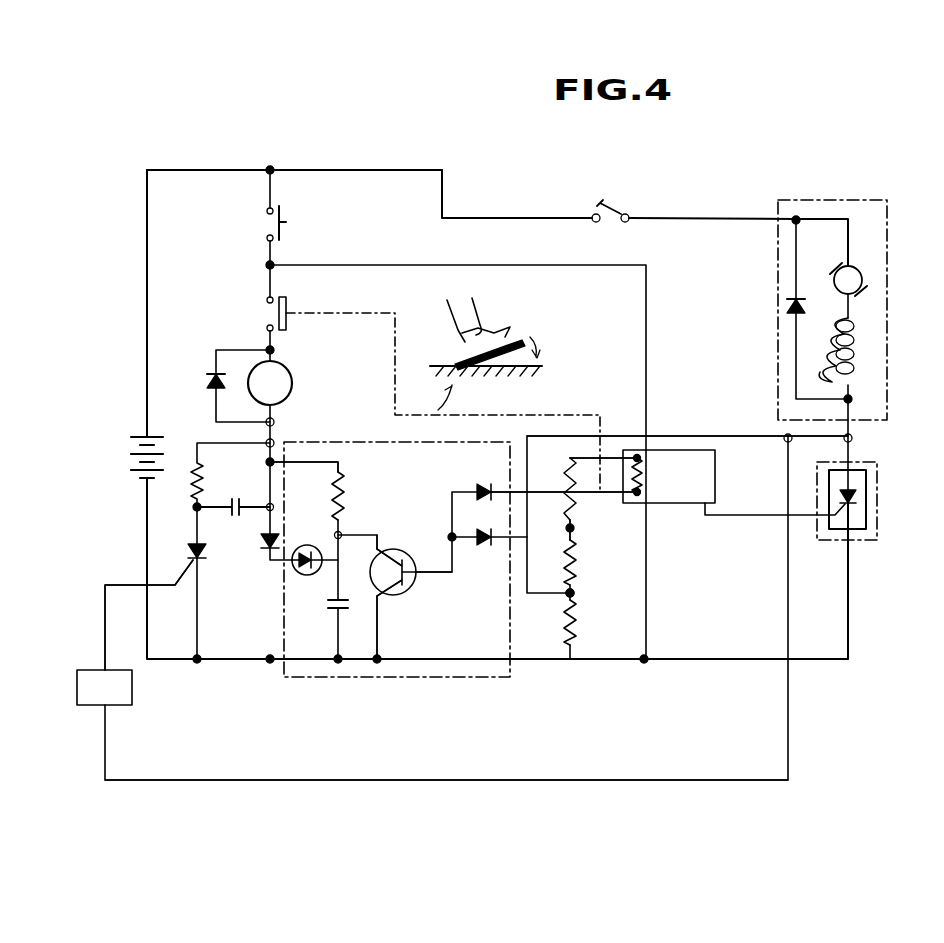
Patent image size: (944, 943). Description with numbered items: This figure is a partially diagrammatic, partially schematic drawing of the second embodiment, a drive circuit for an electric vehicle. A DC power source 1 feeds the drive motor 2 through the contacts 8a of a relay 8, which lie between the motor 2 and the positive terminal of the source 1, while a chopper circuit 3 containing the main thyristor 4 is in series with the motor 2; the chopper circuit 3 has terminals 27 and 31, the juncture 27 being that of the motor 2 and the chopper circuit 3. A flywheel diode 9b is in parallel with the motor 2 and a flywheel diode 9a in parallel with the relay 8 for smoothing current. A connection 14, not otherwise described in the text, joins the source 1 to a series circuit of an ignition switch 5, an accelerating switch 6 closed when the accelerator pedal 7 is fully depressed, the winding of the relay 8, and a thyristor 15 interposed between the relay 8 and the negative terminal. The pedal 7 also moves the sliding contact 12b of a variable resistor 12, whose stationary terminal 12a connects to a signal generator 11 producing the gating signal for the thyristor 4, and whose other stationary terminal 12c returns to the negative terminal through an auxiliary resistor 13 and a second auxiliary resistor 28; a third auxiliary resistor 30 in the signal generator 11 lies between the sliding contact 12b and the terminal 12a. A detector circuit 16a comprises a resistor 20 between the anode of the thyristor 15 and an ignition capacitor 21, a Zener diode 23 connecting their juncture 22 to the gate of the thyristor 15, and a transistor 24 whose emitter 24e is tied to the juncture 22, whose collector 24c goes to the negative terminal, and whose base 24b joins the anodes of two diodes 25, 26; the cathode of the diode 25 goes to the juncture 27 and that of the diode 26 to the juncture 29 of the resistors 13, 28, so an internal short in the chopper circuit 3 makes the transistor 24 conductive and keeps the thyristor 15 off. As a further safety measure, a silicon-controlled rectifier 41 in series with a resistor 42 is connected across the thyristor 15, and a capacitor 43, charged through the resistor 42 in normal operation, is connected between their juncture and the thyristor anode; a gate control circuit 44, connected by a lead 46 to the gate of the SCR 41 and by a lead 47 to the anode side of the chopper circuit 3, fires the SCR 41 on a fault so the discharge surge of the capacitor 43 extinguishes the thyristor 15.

The DC power source 1 is at (130, 450).
The drive motor 2 is at (902, 300).
The chopper circuit 3 is at (906, 529).
The main thyristor 4 is at (859, 500).
The ignition switch 5 is at (266, 227).
The accelerating switch 6 is at (266, 300).
The accelerator pedal 7 is at (498, 336).
The relay 8 is at (298, 372).
The relay contacts 8a is at (630, 190).
The flywheel diode 9a is at (216, 374).
The flywheel diode 9b is at (786, 308).
The signal generator 11 is at (710, 470).
The variable resistor 12 is at (572, 494).
The stationary terminal 12a is at (578, 457).
The sliding contact 12b is at (608, 494).
The stationary terminal 12c is at (570, 530).
The auxiliary resistor 13 is at (576, 558).
The power supply line 14 is at (271, 168).
The thyristor 15 is at (268, 544).
The detector circuit 16a is at (386, 678).
The resistor 20 is at (342, 472).
The ignition capacitor 21 is at (330, 611).
The juncture 22 is at (345, 529).
The Zener diode 23 is at (306, 545).
The transistor 24 is at (407, 590).
The base 24b is at (452, 577).
The collector 24c is at (377, 596).
The emitter 24e is at (387, 550).
The diode 25 is at (474, 491).
The diode 26 is at (476, 540).
The juncture 27 is at (852, 436).
The second auxiliary resistor 28 is at (576, 626).
The juncture 29 is at (588, 596).
The third auxiliary resistor 30 is at (644, 490).
The terminal 31 is at (848, 663).
The silicon-controlled rectifier 41 is at (193, 549).
The resistor 42 is at (190, 472).
The capacitor 43 is at (250, 480).
The gate control circuit 44 is at (132, 683).
The lead 46 is at (104, 602).
The lead 47 is at (461, 782).